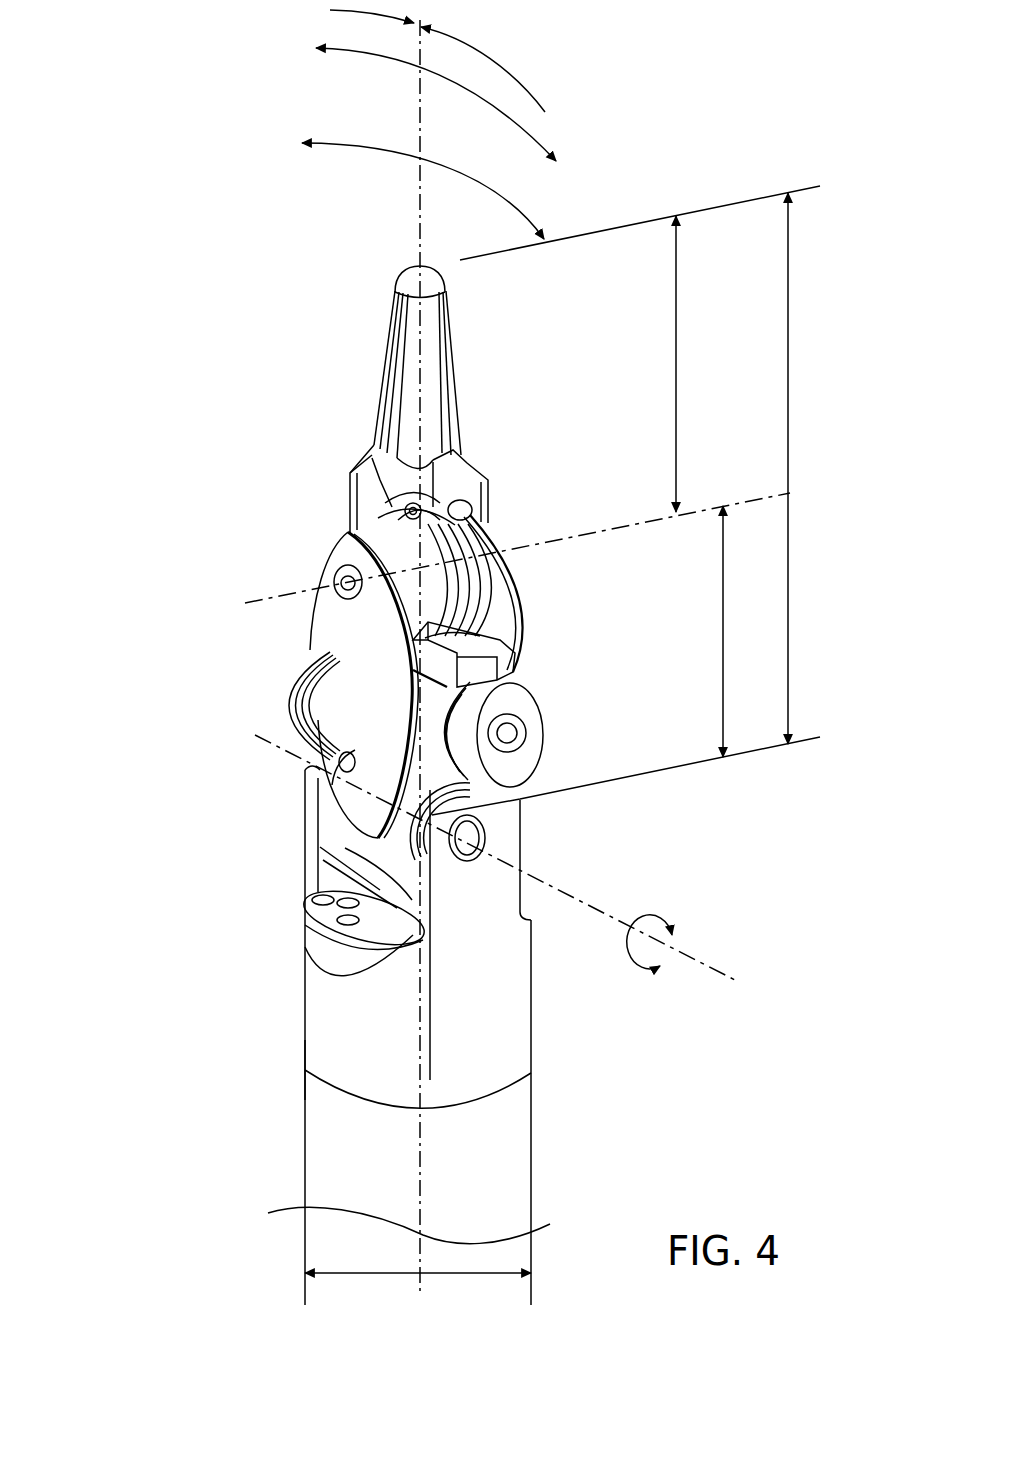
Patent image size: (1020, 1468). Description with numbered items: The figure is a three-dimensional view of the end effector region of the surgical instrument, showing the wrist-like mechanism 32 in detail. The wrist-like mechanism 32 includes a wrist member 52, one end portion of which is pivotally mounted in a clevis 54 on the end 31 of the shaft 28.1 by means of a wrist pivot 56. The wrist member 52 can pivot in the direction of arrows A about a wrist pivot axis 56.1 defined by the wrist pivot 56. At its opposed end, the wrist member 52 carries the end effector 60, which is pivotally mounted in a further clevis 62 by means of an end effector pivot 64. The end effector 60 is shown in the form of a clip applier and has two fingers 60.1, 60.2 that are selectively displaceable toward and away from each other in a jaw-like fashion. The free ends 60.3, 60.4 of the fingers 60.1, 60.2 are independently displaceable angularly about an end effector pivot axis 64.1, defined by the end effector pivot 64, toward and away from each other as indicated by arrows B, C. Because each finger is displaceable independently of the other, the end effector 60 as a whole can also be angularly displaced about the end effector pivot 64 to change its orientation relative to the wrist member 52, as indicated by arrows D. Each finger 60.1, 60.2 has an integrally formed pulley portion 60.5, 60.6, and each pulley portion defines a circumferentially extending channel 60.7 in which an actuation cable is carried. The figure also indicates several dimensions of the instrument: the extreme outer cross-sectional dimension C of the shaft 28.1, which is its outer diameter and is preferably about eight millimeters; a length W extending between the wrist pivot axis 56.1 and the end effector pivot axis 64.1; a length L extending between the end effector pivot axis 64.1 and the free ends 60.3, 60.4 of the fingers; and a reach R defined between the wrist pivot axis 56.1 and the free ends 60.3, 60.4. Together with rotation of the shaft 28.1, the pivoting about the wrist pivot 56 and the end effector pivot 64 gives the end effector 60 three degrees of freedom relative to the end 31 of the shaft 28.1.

The wrist-like mechanism 32 is at (135, 612).
The end effector 60 is at (320, 403).
The finger 60.1 is at (427, 422).
The finger 60.2 is at (383, 385).
The free end of finger 60.3 is at (455, 275).
The free end of finger 60.4 is at (390, 268).
The pulley portion 60.5 is at (472, 525).
The pulley portion 60.6 is at (437, 522).
The circumferentially extending channel 60.7 is at (460, 497).
The clevis 62 is at (498, 580).
The end effector pivot 64 is at (345, 567).
The end effector pivot axis 64.1 is at (268, 598).
The wrist member 52 is at (315, 655).
The clevis 54 is at (300, 862).
The wrist pivot 56 is at (488, 828).
The wrist pivot axis 56.1 is at (595, 897).
The end of the shaft 31 is at (290, 1073).
The shaft 28.1 is at (330, 1156).
The arrows B is at (490, 62).
The arrows C / extreme outer cross-sectional dimension C is at (507, 113).
The arrows D is at (508, 198).
The length L is at (676, 365).
The reach R is at (788, 392).
The length W is at (723, 630).
The arrows A is at (670, 912).